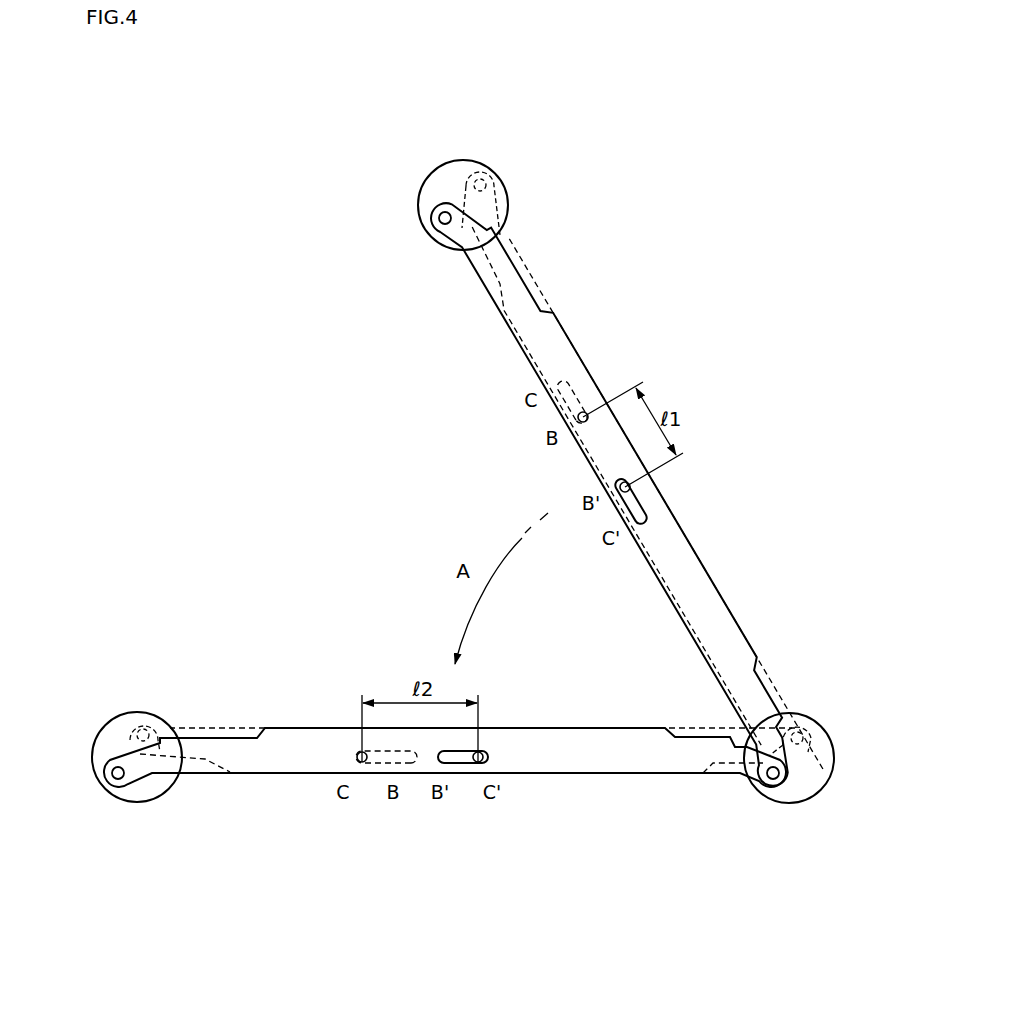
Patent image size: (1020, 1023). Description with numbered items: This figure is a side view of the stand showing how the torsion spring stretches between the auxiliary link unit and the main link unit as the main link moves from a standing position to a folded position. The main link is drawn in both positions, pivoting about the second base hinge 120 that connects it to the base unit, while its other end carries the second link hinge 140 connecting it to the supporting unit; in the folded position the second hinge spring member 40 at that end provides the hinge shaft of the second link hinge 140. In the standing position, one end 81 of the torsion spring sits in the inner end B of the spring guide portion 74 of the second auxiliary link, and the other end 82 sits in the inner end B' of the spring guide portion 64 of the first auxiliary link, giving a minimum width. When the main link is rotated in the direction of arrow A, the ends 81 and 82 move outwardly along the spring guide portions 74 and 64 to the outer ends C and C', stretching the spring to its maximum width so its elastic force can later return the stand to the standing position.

The second hinge spring member 40 is at (472, 158).
The spring guide portion 64 is at (650, 512).
The spring guide portion 74 is at (576, 385).
The one end of the torsion spring 81 is at (362, 763).
The other end of the torsion spring 82 is at (478, 765).
The second base hinge 120 is at (829, 798).
The second link hinge 140 is at (104, 796).